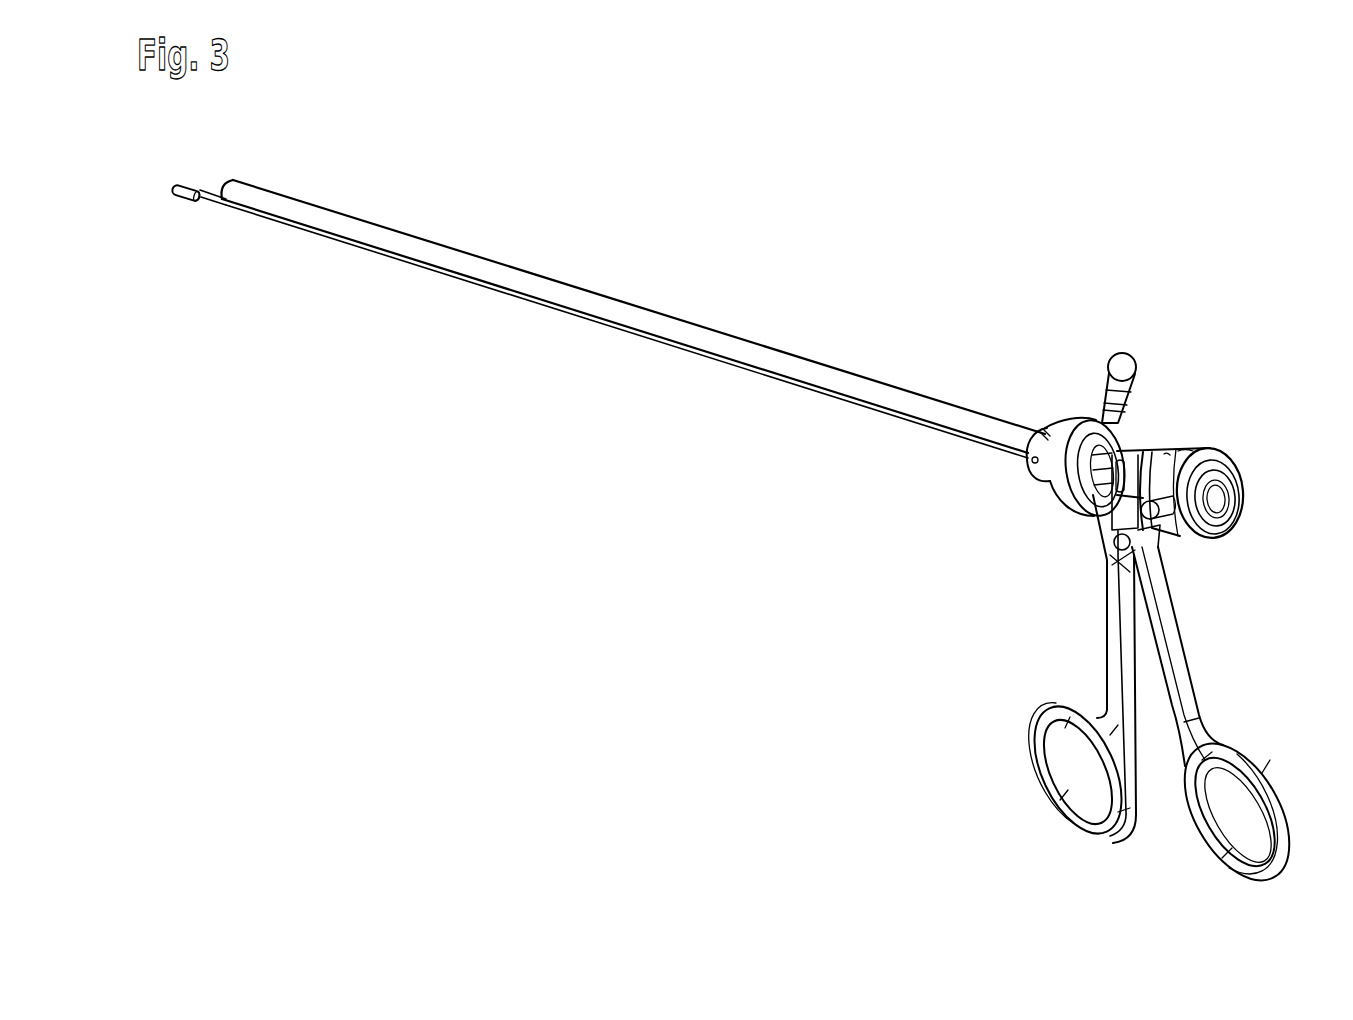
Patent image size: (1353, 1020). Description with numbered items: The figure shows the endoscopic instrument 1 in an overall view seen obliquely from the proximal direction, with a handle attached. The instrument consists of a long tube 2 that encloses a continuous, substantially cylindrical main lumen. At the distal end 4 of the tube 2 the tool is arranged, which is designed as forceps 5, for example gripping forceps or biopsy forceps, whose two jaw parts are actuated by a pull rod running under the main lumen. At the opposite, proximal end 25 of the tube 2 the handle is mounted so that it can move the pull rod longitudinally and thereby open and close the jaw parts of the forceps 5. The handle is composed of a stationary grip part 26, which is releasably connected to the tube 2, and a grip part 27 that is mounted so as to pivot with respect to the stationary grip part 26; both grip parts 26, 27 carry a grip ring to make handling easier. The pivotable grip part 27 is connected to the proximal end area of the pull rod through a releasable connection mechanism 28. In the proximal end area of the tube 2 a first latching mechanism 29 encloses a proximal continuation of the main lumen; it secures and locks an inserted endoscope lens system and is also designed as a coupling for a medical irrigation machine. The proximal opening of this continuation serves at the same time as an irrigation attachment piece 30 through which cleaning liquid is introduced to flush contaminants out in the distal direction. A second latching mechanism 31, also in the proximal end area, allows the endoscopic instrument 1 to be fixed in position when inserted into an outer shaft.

The endoscopic instrument 1 is at (924, 256).
The tube 2 is at (615, 315).
The distal end 4 is at (252, 158).
The forceps 5 is at (179, 224).
The proximal end 25 is at (1066, 360).
The stationary grip part 26 is at (1113, 665).
The grip part 27 is at (1178, 668).
The releasable connection mechanism 28 is at (1151, 426).
The first latching mechanism 29 is at (1244, 398).
The irrigation attachment piece 30 is at (1243, 497).
The second latching mechanism 31 is at (1058, 532).